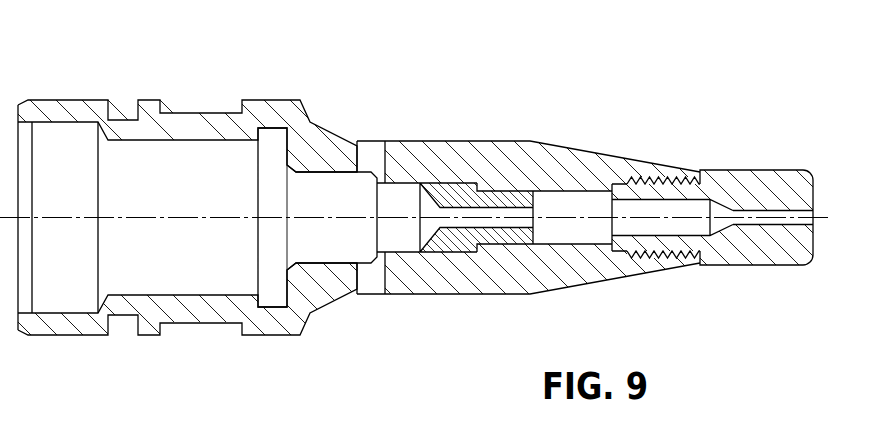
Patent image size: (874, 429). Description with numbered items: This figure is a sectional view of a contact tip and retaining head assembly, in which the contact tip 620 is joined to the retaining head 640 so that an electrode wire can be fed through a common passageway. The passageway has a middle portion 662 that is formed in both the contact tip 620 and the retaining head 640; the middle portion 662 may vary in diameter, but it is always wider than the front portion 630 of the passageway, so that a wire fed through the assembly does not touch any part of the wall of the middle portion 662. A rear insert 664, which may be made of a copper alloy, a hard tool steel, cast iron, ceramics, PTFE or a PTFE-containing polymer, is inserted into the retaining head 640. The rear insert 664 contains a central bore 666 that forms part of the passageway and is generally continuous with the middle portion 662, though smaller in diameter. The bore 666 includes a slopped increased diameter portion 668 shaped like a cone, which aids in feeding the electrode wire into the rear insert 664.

The contact tip 620 is at (787, 157).
The front portion 630 is at (742, 224).
The retaining head 640 is at (204, 113).
The middle portion 662 is at (682, 207).
The rear insert 664 is at (447, 193).
The central bore 666 is at (445, 257).
The slopped increased diameter portion 668 is at (445, 257).